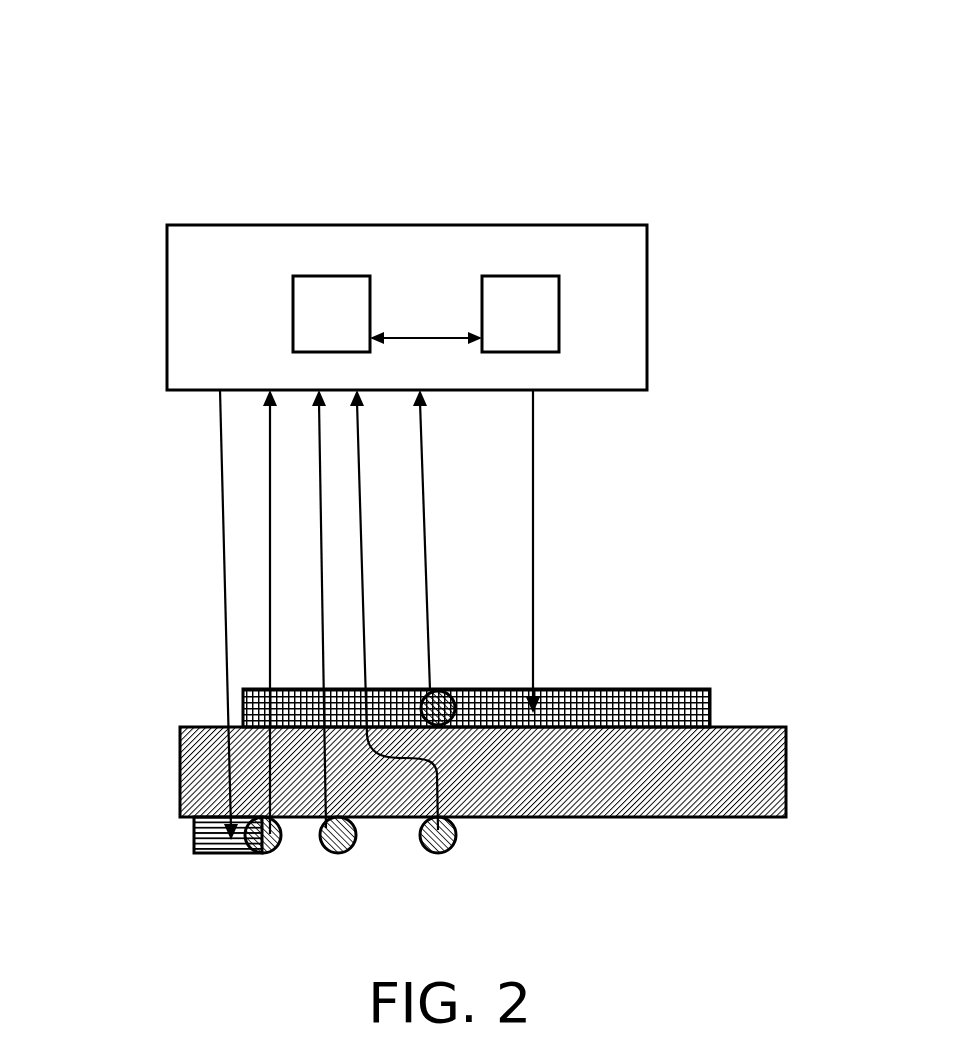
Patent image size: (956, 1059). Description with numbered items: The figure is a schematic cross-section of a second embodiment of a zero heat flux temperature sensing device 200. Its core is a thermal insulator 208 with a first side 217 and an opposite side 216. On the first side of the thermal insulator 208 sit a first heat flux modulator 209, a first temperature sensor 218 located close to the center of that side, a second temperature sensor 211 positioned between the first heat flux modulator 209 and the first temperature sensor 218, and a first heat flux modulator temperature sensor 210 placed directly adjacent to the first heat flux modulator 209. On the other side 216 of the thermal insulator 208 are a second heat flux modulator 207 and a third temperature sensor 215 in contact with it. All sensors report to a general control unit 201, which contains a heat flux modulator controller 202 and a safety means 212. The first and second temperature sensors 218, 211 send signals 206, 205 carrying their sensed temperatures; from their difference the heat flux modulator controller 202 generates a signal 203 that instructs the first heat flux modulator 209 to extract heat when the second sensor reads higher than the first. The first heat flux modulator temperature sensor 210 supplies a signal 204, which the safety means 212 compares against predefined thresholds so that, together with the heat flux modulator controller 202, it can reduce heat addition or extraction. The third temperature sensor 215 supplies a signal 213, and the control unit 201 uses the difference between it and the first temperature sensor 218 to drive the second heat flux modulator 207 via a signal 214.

The zero heat flux temperature sensing device 200 is at (144, 108).
The general control unit 201 is at (425, 225).
The heat flux modulator controller 202 is at (331, 314).
The safety means 212 is at (520, 314).
The signal 203 is at (220, 444).
The signal 204 is at (268, 496).
The signal 205 is at (326, 556).
The signal 206 is at (362, 600).
The signal 213 is at (427, 473).
The signal 214 is at (533, 520).
The second heat flux modulator 207 is at (243, 712).
The thermal insulator 208 is at (180, 760).
The first heat flux modulator 209 is at (194, 836).
The third temperature sensor 215 is at (455, 689).
The first side 216 is at (433, 731).
The first side 217 is at (610, 818).
The first heat flux modulator temperature sensor 210 is at (268, 853).
The second temperature sensor 211 is at (341, 853).
The first temperature sensor 218 is at (445, 853).